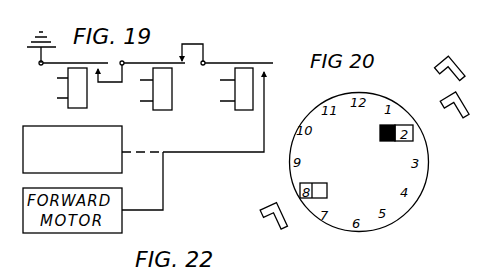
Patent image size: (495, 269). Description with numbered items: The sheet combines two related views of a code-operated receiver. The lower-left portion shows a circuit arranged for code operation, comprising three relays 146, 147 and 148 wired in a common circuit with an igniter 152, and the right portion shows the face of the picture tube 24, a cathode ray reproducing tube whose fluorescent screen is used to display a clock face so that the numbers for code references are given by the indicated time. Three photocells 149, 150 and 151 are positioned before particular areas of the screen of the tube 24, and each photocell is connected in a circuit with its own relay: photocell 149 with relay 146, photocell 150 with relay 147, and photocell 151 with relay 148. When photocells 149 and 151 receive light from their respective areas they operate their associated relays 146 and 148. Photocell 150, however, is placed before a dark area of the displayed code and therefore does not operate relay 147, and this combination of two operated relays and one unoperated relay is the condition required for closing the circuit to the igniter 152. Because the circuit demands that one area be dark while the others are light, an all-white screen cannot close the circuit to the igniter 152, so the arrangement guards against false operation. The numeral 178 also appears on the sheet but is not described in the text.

In FIG. 19, the relay 146 is at (68, 85).
In FIG. 19, the relay 147 is at (165, 112).
In FIG. 19, the relay 148 is at (247, 111).
In FIG. 19, the igniter 152 is at (121, 164).
In FIG. 19, the forward motor circuit 178 is at (54, 261).
In FIG. 20, the picture tube 24 is at (425, 177).
In FIG. 20, the photocell 149 is at (301, 192).
In FIG. 20, the photocell 150 is at (389, 126).
In FIG. 20, the photocell 151 is at (446, 108).